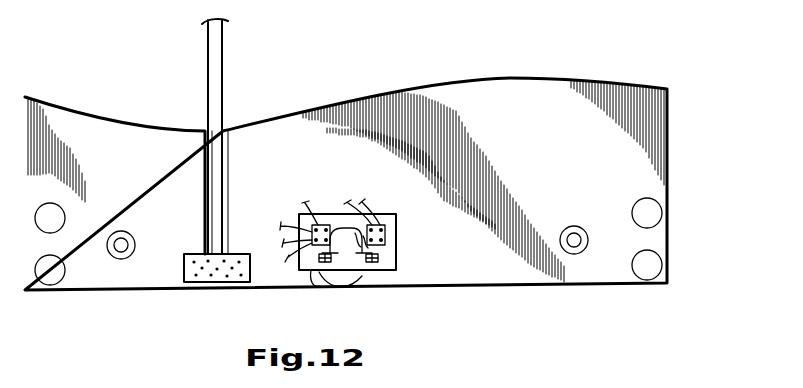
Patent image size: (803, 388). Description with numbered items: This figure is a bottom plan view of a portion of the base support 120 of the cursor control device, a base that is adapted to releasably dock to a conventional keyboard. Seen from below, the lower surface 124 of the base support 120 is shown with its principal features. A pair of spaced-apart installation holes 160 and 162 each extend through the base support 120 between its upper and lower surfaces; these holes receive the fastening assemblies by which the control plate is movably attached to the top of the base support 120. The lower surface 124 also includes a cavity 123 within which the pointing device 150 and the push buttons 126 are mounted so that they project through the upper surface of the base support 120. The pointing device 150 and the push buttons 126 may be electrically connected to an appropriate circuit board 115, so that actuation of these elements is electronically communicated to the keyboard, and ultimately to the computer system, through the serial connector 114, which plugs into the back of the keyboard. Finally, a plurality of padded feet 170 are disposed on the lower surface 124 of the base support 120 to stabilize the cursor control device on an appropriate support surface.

The serial connector 114 is at (213, 50).
The circuit board 115 is at (200, 255).
The base support 120 is at (640, 124).
The cavity 123 is at (383, 259).
The lower surface 124 is at (542, 151).
The push buttons 126 is at (329, 227).
The pointing device 150 is at (355, 257).
The first installation hole 160 is at (574, 254).
The second installation hole 162 is at (121, 259).
The padded feet 170 is at (650, 265).